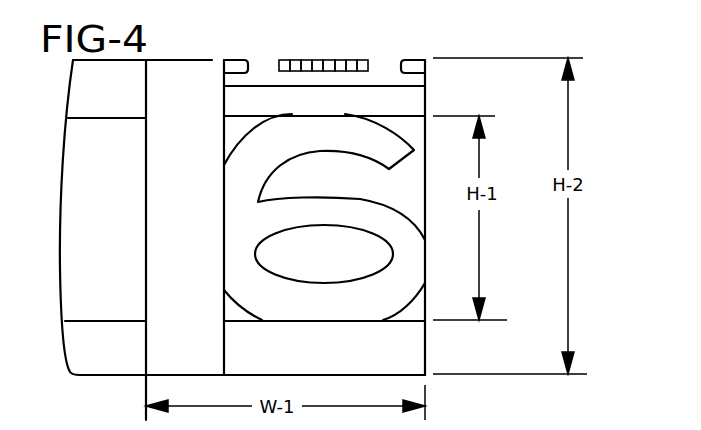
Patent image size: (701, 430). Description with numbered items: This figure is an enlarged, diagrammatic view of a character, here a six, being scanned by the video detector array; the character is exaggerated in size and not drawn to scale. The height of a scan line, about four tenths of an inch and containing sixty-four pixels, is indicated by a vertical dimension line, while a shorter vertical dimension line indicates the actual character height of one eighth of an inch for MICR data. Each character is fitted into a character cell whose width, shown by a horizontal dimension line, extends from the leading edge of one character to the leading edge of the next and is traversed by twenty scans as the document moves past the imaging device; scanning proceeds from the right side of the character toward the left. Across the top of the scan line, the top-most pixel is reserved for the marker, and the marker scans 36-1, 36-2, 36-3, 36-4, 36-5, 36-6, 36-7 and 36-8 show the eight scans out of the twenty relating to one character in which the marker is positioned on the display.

The marker scan 36-1 is at (369, 63).
The marker scan 36-2 is at (357, 59).
The marker scan 36-3 is at (344, 59).
The marker scan 36-4 is at (332, 59).
The marker scan 36-5 is at (317, 72).
The marker scan 36-6 is at (308, 72).
The marker scan 36-7 is at (298, 59).
The marker scan 36-8 is at (285, 59).